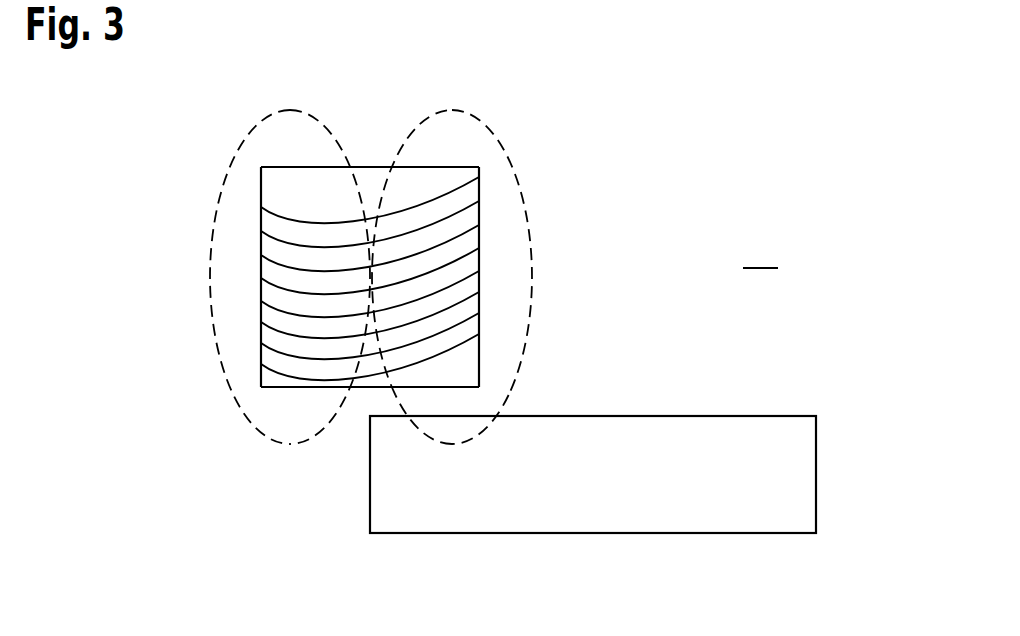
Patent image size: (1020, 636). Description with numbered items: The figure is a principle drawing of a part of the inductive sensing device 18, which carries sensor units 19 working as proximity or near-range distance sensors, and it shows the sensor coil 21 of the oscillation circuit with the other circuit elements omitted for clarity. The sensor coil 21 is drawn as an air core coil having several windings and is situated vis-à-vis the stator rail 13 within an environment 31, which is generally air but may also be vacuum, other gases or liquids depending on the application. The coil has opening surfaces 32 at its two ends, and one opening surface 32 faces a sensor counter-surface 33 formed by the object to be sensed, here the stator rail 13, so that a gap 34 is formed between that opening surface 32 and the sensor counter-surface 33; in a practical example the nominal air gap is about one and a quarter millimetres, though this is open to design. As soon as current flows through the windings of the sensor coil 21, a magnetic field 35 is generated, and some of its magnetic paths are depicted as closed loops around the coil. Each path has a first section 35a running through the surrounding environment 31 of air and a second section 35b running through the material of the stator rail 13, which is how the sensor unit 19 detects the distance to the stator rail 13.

The stator rail 13 is at (817, 474).
The inductive sensing device 18 is at (706, 169).
The sensor unit 19 is at (175, 330).
The sensor coil 21 is at (258, 279).
The environment 31 is at (760, 251).
The opening surface 32 is at (370, 166).
The sensor counter-surface 33 is at (681, 406).
The gap 34 is at (470, 399).
The magnetic field 35 is at (521, 145).
The first section 35a is at (212, 208).
The second section 35b is at (428, 446).